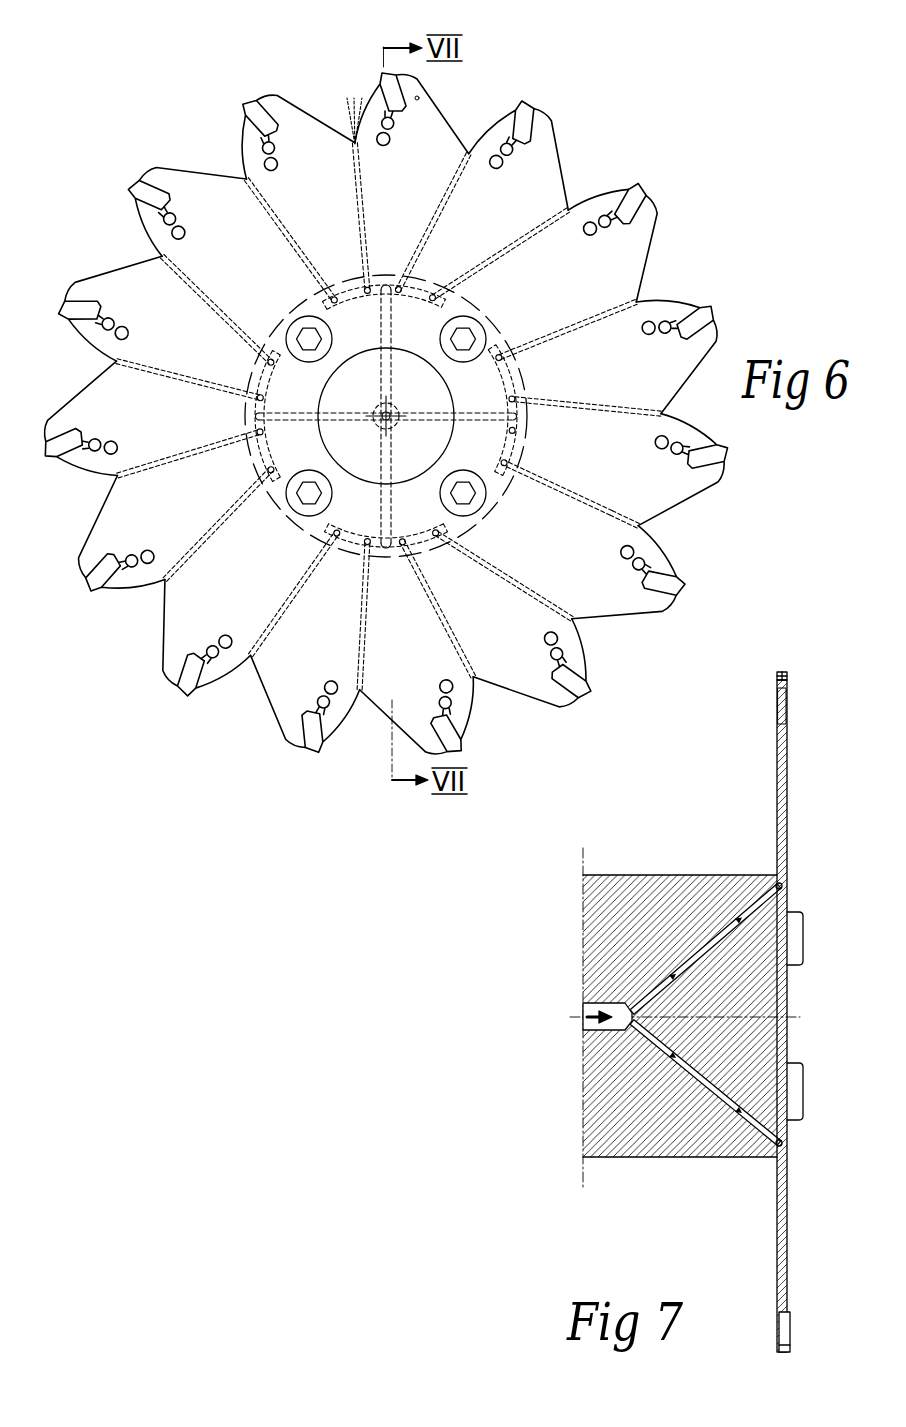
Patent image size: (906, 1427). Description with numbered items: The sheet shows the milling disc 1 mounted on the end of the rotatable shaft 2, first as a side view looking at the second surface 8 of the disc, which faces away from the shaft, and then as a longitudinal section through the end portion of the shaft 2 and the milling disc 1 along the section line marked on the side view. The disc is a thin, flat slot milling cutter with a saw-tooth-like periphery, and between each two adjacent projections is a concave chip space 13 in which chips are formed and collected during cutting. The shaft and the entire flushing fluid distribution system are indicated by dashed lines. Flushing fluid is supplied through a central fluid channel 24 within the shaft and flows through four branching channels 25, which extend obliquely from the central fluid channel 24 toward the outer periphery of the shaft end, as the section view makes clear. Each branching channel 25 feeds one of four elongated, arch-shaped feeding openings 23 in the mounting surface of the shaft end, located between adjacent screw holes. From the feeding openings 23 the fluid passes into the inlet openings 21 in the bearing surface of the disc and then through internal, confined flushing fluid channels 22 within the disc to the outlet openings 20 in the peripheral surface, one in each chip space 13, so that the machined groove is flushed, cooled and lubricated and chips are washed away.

In FIG. 7, the milling disc 1 is at (800, 736).
In FIG. 7, the rotatable shaft 2 is at (637, 866).
In FIG. 6, the second surface 8 is at (205, 600).
In FIG. 6, the chip space 13 is at (582, 179).
In FIG. 6, the outlet opening 20 is at (643, 530).
In FIG. 6, the inlet opening 21 is at (503, 366).
In FIG. 6, the flushing fluid channel 22 is at (547, 490).
In FIG. 6, the feeding opening 23 is at (516, 456).
In FIG. 6, the central fluid channel 24 is at (396, 411).
In FIG. 7, the central fluid channel 24 is at (585, 1016).
In FIG. 6, the branching channel 25 is at (288, 416).
In FIG. 7, the branching channel 25 is at (722, 932).